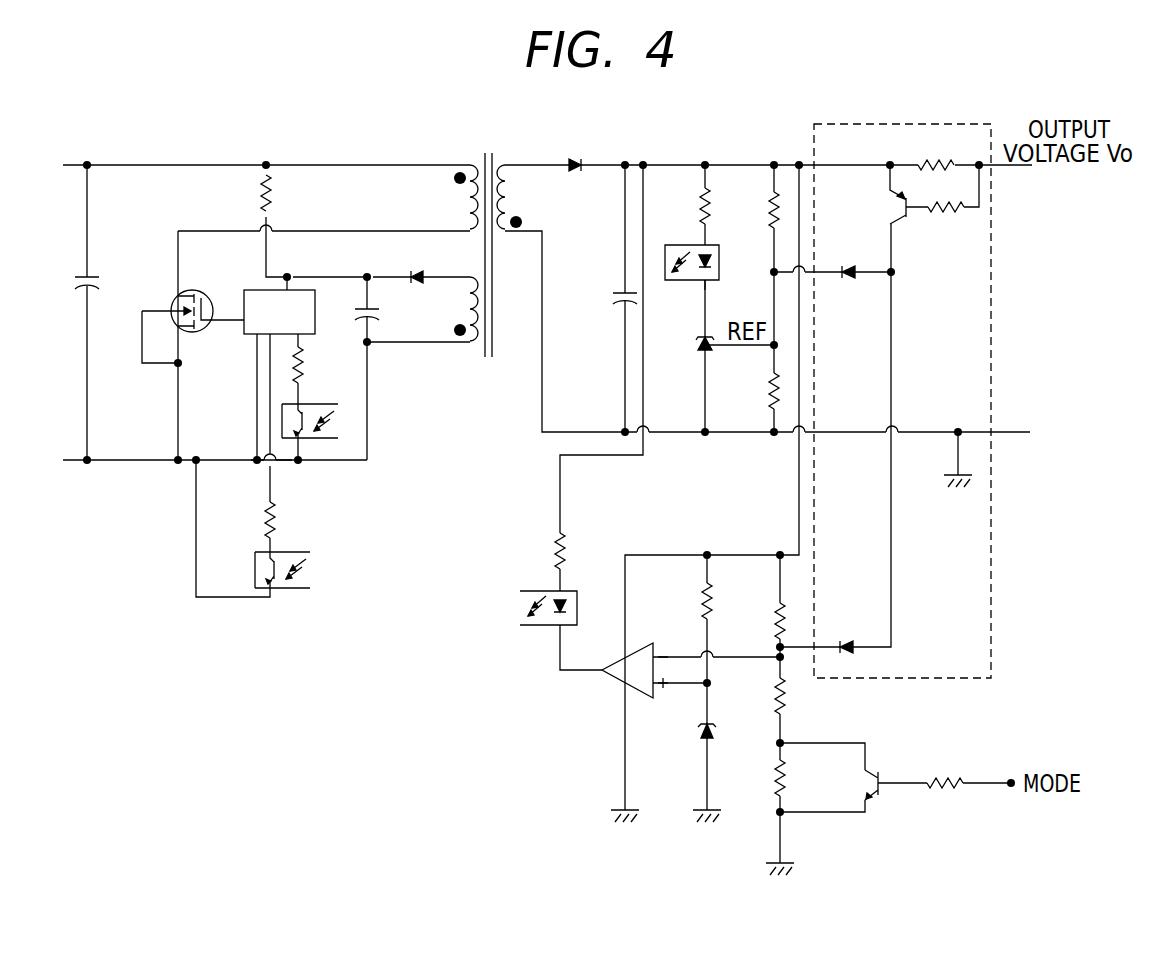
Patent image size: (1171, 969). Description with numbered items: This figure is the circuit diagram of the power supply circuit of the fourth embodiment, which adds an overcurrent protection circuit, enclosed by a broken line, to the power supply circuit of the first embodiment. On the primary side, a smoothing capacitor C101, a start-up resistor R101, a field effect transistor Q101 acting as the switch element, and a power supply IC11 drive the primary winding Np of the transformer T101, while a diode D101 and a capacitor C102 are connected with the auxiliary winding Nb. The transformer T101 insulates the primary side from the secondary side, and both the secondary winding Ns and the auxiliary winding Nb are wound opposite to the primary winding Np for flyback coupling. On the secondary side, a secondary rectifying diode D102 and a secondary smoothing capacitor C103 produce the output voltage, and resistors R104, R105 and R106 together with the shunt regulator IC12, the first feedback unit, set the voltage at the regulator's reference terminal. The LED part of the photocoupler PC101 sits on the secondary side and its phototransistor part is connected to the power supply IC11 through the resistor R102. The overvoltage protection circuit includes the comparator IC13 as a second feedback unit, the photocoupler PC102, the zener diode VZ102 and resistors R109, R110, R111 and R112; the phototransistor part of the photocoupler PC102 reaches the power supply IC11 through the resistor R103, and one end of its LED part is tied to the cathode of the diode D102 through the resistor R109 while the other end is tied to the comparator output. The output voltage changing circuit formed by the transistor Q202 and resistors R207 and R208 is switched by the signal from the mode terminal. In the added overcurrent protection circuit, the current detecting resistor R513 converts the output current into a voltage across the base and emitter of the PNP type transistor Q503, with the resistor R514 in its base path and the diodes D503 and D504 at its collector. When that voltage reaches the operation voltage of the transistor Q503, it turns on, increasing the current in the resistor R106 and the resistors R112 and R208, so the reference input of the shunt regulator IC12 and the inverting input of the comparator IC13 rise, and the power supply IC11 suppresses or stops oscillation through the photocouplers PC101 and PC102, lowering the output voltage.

The smoothing capacitor C101 is at (110, 312).
The start-up resistor R101 is at (239, 193).
The field effect transistor Q101 is at (193, 296).
The power supply IC IC11 is at (279, 312).
The resistor R102 is at (323, 369).
The photocoupler PC101 is at (323, 438).
The resistor R103 is at (297, 527).
The photocoupler PC102 is at (386, 558).
The capacitor C102 is at (392, 322).
The diode D101 is at (415, 262).
The transformer T101 is at (488, 240).
The primary winding Np is at (453, 200).
The auxiliary winding Nb is at (453, 312).
The secondary winding Ns is at (523, 202).
The secondary rectifying diode D102 is at (578, 181).
The secondary smoothing capacitor C103 is at (602, 286).
The resistor R104 is at (708, 190).
The resistor R105 is at (766, 210).
The shunt regulator IC12 is at (684, 357).
The resistor R106 is at (746, 391).
The resistor R109 is at (532, 551).
The resistor R110 is at (678, 601).
The resistor R111 is at (752, 622).
The comparator IC13 is at (619, 679).
The zener diode VZ102 is at (675, 730).
The resistor R112 is at (808, 696).
The resistor R208 is at (751, 778).
The transistor Q202 is at (844, 785).
The resistor R207 is at (944, 799).
The diode D504 is at (849, 633).
The diode D503 is at (849, 290).
The PNP type transistor Q503 is at (869, 208).
The current detecting resistor R513 is at (936, 151).
The resistor R514 is at (944, 224).